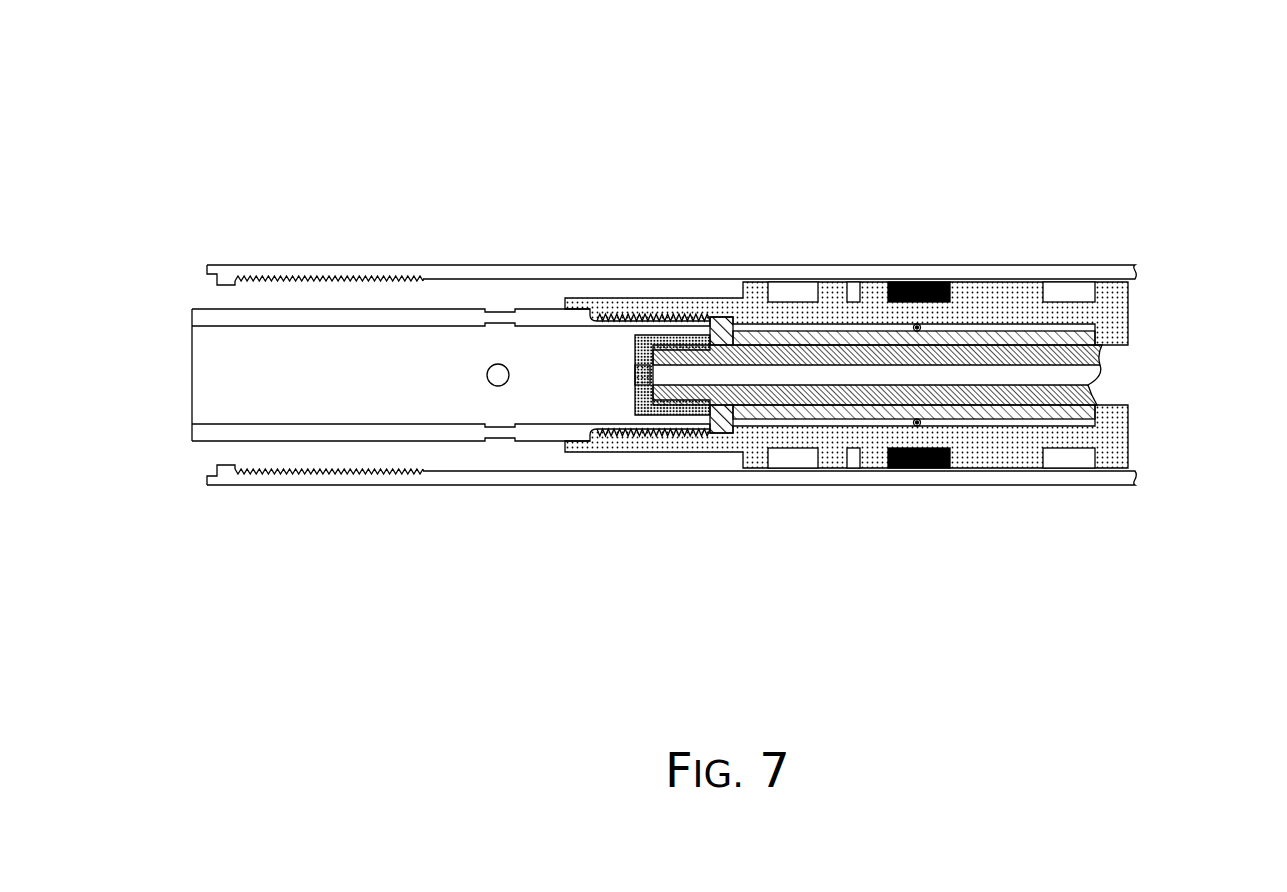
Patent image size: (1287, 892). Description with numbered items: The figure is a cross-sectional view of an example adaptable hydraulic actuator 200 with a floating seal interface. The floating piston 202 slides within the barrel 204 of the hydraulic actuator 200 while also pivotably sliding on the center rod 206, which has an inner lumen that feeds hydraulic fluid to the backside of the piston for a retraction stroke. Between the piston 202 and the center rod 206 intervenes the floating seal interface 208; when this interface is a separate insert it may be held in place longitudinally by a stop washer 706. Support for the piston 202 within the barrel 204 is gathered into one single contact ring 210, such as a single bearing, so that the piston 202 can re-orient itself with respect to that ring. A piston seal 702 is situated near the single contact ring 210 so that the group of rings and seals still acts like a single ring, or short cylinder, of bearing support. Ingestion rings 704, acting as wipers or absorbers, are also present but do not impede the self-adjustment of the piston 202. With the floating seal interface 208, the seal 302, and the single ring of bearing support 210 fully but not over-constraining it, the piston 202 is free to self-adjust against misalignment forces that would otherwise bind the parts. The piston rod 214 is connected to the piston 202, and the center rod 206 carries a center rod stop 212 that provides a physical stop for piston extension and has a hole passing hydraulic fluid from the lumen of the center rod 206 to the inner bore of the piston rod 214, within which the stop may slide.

The hydraulic actuator 200 is at (727, 132).
The floating piston 202 is at (1110, 312).
The barrel 204 is at (482, 263).
The center rod 206 is at (1097, 387).
The floating seal interface 208 is at (1042, 415).
The single contact ring 210 is at (922, 279).
The center rod stop 212 is at (633, 398).
The piston rod 214 is at (462, 403).
The seal 302 is at (908, 424).
The piston seal 702 is at (857, 279).
The ingestion rings 704 is at (785, 279).
The stop washer 706 is at (728, 418).